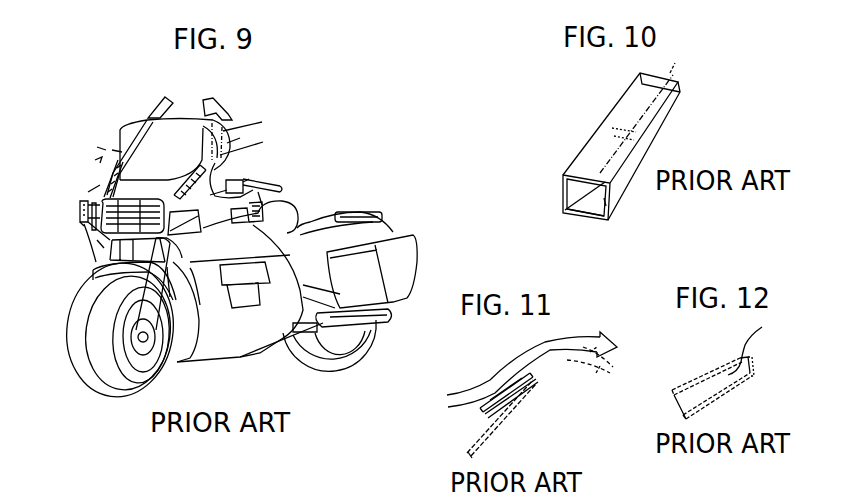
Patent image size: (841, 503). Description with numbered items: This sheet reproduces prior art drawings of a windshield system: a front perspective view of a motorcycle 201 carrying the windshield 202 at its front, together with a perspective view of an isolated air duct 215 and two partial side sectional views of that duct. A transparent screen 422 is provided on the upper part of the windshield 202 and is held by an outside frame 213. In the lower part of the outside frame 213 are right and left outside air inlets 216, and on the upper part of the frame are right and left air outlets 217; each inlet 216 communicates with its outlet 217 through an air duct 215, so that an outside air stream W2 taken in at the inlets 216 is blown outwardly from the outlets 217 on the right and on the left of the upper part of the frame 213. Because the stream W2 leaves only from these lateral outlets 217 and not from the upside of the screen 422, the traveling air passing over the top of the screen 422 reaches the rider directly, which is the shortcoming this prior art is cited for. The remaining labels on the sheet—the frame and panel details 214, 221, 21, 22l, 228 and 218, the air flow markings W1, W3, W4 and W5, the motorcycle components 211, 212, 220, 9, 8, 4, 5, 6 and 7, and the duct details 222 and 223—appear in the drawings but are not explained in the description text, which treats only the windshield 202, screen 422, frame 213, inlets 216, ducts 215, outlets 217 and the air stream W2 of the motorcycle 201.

In FIG. 9, the motorcycle 201 is at (62, 155).
In FIG. 9, the windshield 202 is at (128, 127).
In FIG. 11, the windshield 202 is at (500, 418).
In FIG. 9, the windshield panel 214 is at (137, 180).
In FIG. 9, the transparent screen 422 is at (127, 146).
In FIG. 9, the seal strip 221 is at (108, 145).
In FIG. 11, the seal strip 221 is at (497, 396).
In FIG. 9, the outside air inlet 216 is at (100, 146).
In FIG. 10, the outside air inlet 216 is at (587, 207).
In FIG. 9, the air duct 215 is at (268, 147).
In FIG. 10, the air duct 215 is at (607, 125).
In FIG. 11, the air duct 215 is at (470, 416).
In FIG. 9, the windshield 21 is at (250, 143).
In FIG. 9, the outside frame 213 is at (253, 122).
In FIG. 9, the frame edge 22l is at (243, 136).
In FIG. 9, the air outlet 217 is at (147, 117).
In FIG. 10, the air outlet 217 is at (681, 62).
In FIG. 11, the air outlet 217 is at (540, 386).
In FIG. 12, the air outlet 217 is at (738, 356).
In FIG. 9, the outside air stream W2 is at (162, 97).
In FIG. 11, the outside air stream W2 is at (538, 372).
In FIG. 12, the outside air stream W2 is at (743, 346).
In FIG. 9, the top edge portion 228 is at (183, 118).
In FIG. 9, the top surface 218 is at (203, 100).
In FIG. 9, the airflow W1 is at (157, 177).
In FIG. 9, the handlebar grip 211 is at (82, 201).
In FIG. 9, the mirror stay 212 is at (97, 200).
In FIG. 9, the front grille 220 is at (143, 199).
In FIG. 11, the front grille 220 is at (514, 398).
In FIG. 9, the handlebar 9 is at (275, 185).
In FIG. 9, the cowl opening 8 is at (228, 180).
In FIG. 9, the front fork 4 is at (150, 307).
In FIG. 9, the front wheel 5 is at (67, 329).
In FIG. 9, the headlamp 6 is at (80, 221).
In FIG. 9, the front cowl 7 is at (97, 240).
In FIG. 10, the tube inner wall 222 is at (608, 205).
In FIG. 11, the airflow W5 is at (582, 336).
In FIG. 11, the airflow W4 is at (592, 382).
In FIG. 11, the airflow W3 is at (522, 362).
In FIG. 12, the end piece 223 is at (755, 362).